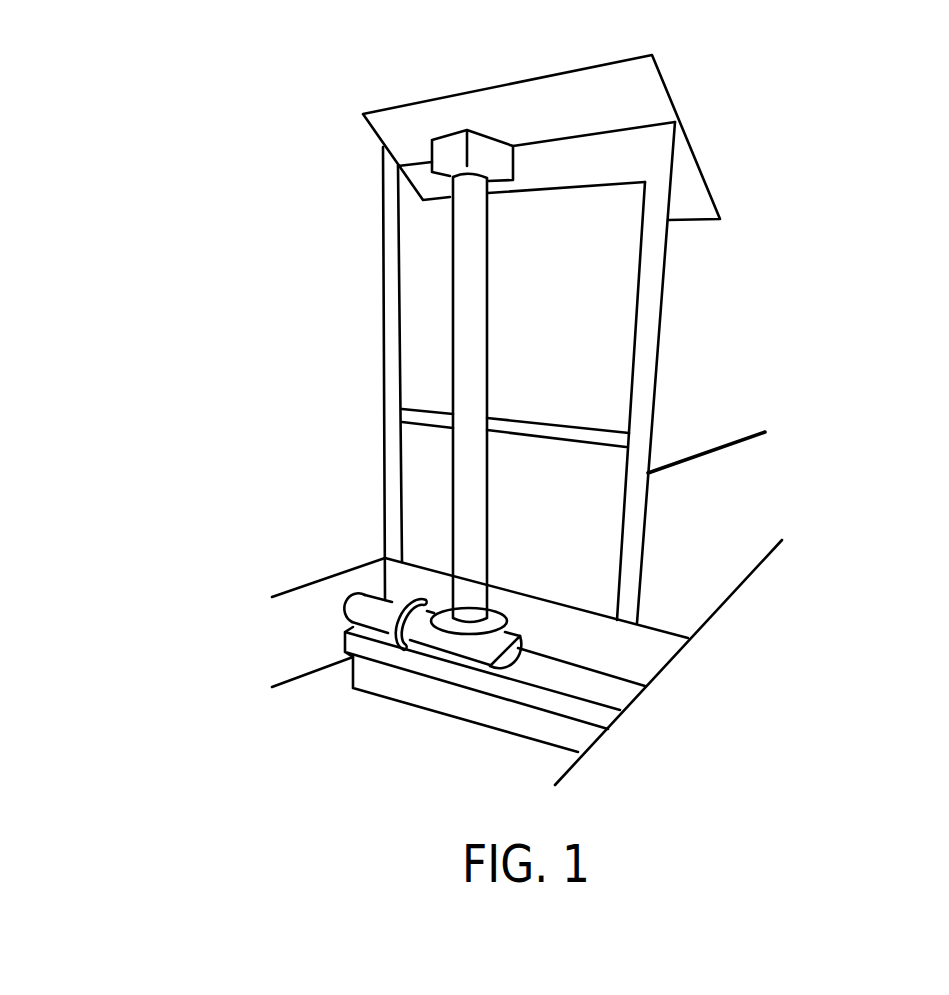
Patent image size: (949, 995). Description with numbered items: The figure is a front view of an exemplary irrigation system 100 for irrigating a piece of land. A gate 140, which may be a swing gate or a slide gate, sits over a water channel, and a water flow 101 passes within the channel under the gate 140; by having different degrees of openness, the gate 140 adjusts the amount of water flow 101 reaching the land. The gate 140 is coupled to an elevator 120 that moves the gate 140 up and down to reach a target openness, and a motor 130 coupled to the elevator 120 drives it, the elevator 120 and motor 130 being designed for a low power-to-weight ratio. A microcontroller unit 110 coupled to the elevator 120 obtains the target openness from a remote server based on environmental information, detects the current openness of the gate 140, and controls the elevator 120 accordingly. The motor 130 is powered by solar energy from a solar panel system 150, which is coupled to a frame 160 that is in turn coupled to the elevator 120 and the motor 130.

The irrigation system 100 is at (148, 152).
The water flow 101 is at (755, 505).
The microcontroller unit (MCU) 110 is at (448, 133).
The elevator 120 is at (488, 525).
The motor 130 is at (424, 599).
The gate 140 is at (580, 733).
The solar panel system 150 is at (668, 90).
The frame 160 is at (653, 312).